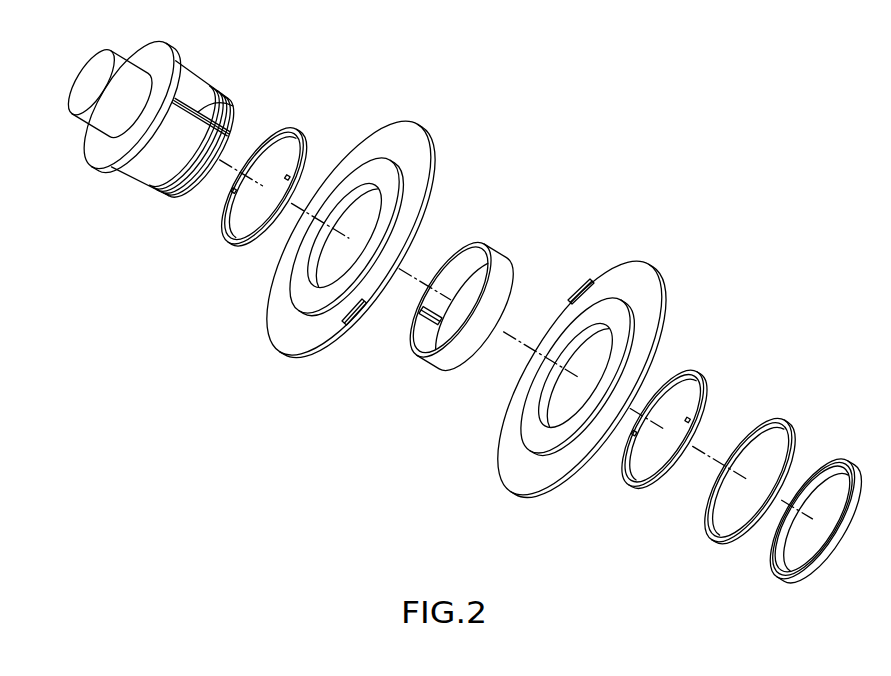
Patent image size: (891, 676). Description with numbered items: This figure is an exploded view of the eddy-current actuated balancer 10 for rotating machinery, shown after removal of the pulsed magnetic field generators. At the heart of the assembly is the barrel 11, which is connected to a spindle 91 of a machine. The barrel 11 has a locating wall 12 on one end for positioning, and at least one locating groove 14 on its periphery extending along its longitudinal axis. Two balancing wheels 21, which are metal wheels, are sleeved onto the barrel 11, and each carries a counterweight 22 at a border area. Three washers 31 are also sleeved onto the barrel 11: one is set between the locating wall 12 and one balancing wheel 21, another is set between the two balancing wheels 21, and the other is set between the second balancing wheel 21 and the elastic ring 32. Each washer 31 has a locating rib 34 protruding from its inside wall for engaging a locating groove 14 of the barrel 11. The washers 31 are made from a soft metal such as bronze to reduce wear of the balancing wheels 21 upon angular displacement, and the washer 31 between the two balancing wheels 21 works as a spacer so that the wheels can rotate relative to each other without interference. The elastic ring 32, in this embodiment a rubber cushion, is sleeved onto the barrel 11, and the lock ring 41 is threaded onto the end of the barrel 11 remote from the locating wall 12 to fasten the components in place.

The eddy-current actuated balancer 10 is at (230, 438).
The barrel 11 is at (186, 62).
The locating wall 12 is at (95, 160).
The locating groove 14 is at (200, 108).
The balancing wheel 21 is at (267, 313).
The counterweight 22 is at (293, 353).
The washer 31 is at (303, 148).
The elastic ring 32 is at (787, 427).
The locating rib 34 is at (440, 258).
The lock ring 41 is at (848, 467).
The spindle 91 is at (78, 80).